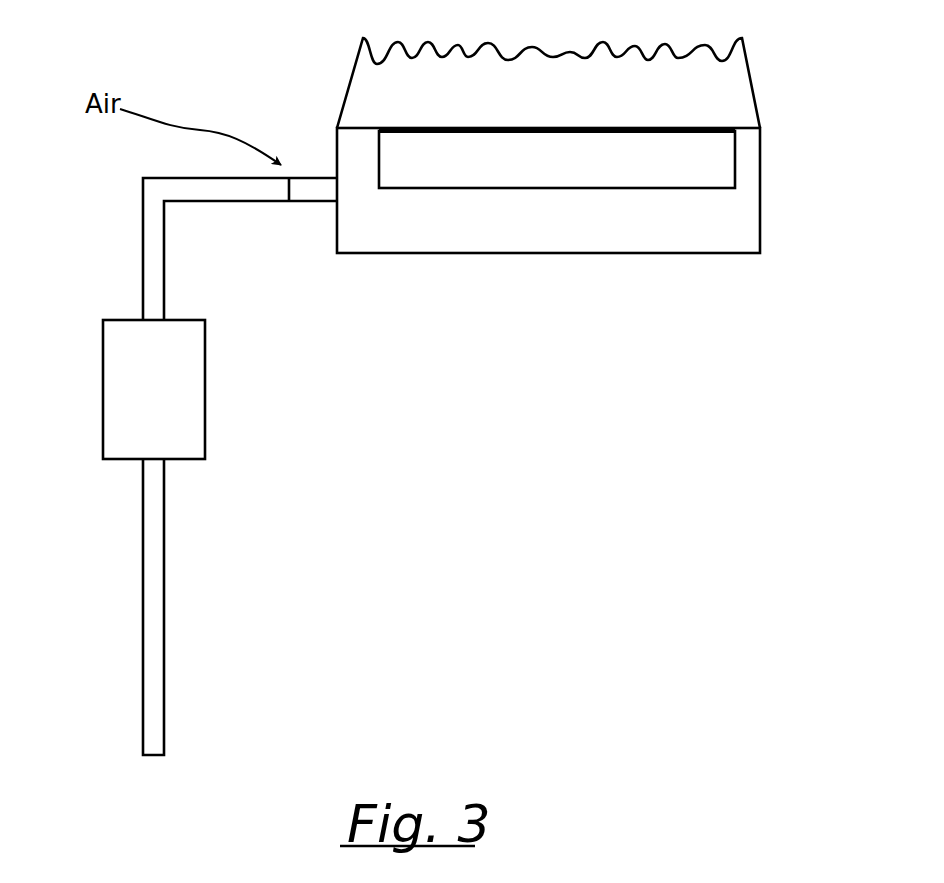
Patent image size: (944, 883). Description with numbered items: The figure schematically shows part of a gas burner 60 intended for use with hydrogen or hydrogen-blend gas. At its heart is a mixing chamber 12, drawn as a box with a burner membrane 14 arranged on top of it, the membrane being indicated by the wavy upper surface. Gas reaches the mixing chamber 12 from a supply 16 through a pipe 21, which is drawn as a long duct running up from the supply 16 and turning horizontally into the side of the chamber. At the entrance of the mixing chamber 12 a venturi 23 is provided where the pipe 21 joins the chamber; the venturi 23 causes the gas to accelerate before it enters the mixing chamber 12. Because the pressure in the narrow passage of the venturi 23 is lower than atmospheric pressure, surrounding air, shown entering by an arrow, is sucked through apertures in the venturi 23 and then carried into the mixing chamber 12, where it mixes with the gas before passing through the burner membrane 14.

The mixing chamber 12 is at (740, 224).
The burner membrane 14 is at (557, 158).
The supply 16 is at (154, 389).
The pipe 21 is at (155, 248).
The venturi 23 is at (317, 183).
The gas burner 60 is at (606, 266).